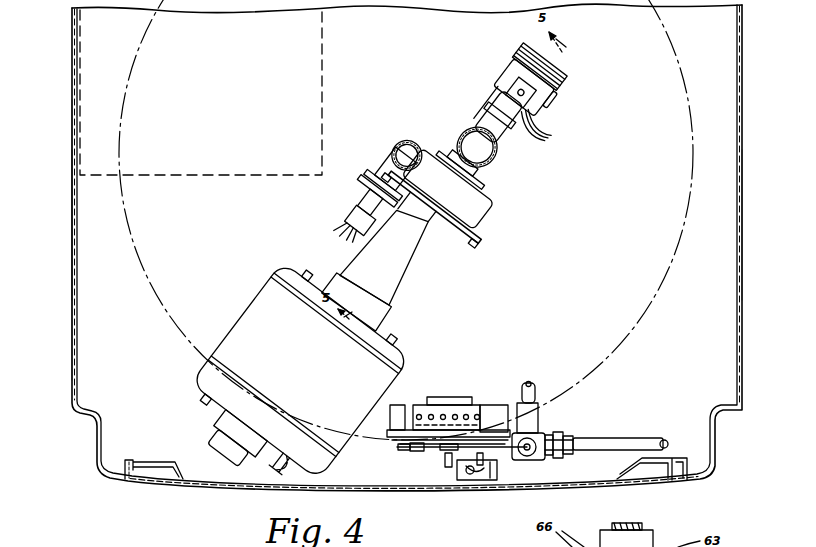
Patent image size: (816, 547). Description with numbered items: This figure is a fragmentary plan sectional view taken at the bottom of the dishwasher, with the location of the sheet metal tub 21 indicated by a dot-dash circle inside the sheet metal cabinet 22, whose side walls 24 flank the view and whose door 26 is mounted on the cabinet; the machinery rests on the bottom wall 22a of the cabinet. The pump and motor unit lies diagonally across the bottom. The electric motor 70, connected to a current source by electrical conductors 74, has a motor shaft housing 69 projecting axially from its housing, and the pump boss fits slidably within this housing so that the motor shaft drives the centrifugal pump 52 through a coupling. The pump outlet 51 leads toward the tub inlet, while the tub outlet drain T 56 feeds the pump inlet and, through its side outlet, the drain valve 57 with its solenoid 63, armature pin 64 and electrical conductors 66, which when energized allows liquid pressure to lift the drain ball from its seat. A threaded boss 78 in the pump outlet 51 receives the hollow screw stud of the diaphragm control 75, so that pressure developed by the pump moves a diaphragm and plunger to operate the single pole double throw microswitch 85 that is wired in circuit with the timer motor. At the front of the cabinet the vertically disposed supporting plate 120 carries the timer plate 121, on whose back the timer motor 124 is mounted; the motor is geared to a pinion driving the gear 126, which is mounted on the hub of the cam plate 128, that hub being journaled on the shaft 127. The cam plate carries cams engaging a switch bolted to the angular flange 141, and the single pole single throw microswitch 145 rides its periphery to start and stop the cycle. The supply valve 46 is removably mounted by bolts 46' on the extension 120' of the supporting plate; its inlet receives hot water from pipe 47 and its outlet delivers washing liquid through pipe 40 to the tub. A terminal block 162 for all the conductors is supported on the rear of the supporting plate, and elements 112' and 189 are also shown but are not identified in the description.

The tub 21 is at (646, 320).
The cabinet 22 is at (91, 444).
The bottom wall 22a is at (98, 327).
The side walls 24 is at (70, 223).
The door 26 is at (200, 488).
The pipe 40 is at (635, 438).
The supply valve 46 is at (578, 427).
The bolts 46' is at (528, 471).
The pipe 47 is at (535, 408).
The pump outlet 51 is at (397, 143).
The centrifugal pump 52 is at (485, 214).
The tub outlet drain T 56 is at (496, 157).
The drain valve 57 is at (545, 100).
The solenoid 63 is at (527, 73).
The armature pin 64 is at (513, 90).
The electrical conductors 66 is at (549, 138).
The motor shaft housing 69 is at (407, 273).
The electric motor 70 is at (248, 313).
The electrical conductors 74 is at (281, 462).
The diaphragm control 75 is at (372, 183).
The threaded boss 78 is at (387, 163).
The microswitch 85 is at (350, 215).
The shaft collar 112' is at (403, 458).
The supporting plate 120 is at (452, 405).
The extension 120' is at (569, 428).
The timer plate 121 is at (395, 447).
The timer motor 124 is at (452, 403).
The gear 126 is at (460, 418).
The shaft 127 is at (445, 462).
The cam plate 128 is at (440, 450).
The angular flange 141 is at (495, 477).
The microswitch 145 is at (467, 470).
The terminal block 162 is at (433, 404).
The hook 189 is at (482, 472).